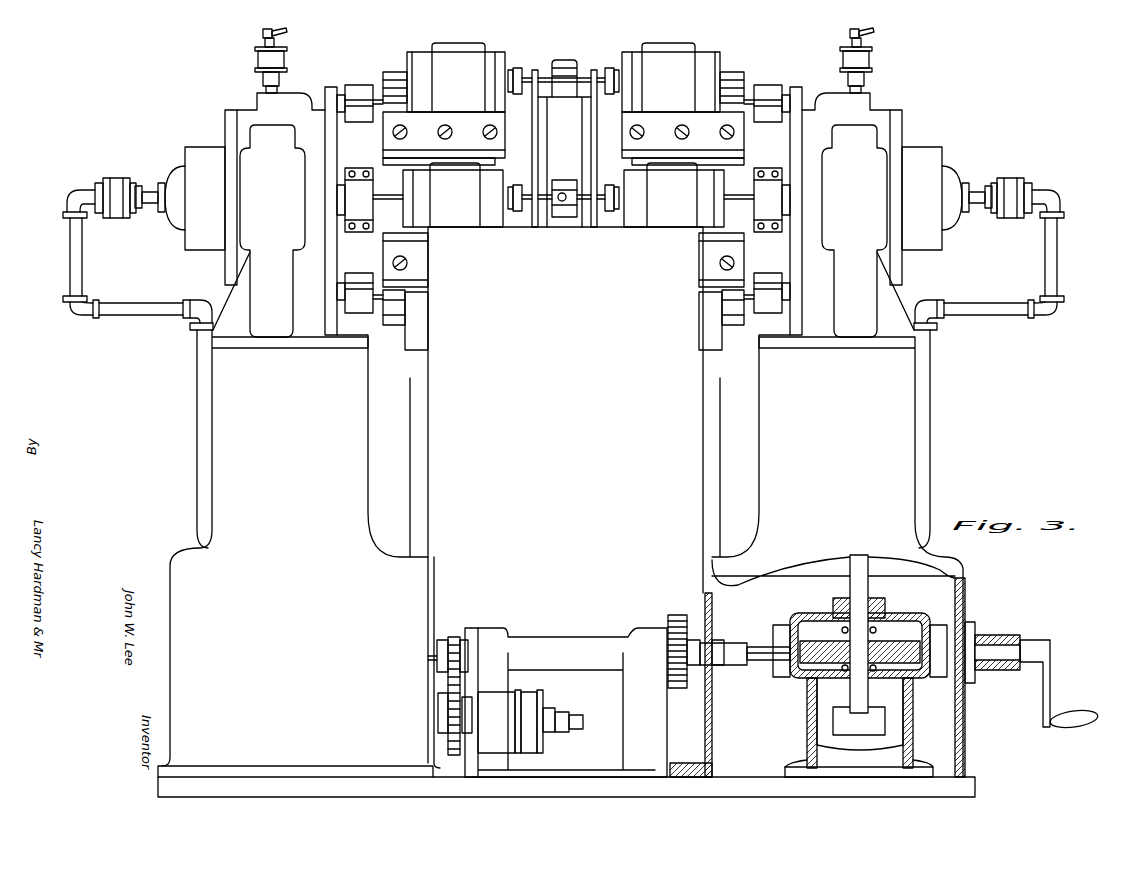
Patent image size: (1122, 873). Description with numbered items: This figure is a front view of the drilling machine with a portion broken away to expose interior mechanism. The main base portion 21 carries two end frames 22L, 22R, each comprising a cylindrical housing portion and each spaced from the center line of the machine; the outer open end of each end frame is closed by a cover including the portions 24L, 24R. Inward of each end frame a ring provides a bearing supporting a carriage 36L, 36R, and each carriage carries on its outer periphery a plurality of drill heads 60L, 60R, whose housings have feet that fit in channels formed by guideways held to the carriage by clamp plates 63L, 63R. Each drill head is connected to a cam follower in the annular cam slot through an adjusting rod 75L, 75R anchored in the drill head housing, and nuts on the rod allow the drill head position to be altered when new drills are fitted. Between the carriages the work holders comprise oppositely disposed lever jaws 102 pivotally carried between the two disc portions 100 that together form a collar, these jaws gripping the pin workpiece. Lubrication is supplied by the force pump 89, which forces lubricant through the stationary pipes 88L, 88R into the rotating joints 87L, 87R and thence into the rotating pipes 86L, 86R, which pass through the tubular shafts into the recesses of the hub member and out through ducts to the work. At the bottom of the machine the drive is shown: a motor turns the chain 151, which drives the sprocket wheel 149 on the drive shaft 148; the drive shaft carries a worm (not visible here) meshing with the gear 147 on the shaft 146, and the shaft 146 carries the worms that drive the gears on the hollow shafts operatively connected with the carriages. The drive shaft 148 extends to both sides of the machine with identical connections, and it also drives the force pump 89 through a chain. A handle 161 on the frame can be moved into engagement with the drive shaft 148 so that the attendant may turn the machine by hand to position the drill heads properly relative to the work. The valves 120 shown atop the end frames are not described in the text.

The main base portion 21 is at (228, 565).
The end frame 22L is at (240, 118).
The end frame 22R is at (887, 128).
The cover portion 24L is at (209, 244).
The cover portion 24R is at (918, 242).
The carriage 36L is at (395, 168).
The carriage 36R is at (732, 172).
The drill head 60L is at (467, 215).
The drill head 60R is at (677, 213).
The clamp plate 63L is at (462, 124).
The clamp plate 63R is at (662, 124).
The adjusting rod 75L is at (395, 197).
The adjusting rod 75R is at (737, 196).
The pipe 86L is at (157, 204).
The pipe 86R is at (975, 193).
The rotating joint 87L is at (118, 178).
The rotating joint 87R is at (1013, 180).
The feed pipe 88L is at (78, 252).
The pipe 88R is at (1052, 258).
The force pump 89 is at (548, 713).
The disc portions 100 is at (590, 112).
The lever jaws 102 is at (565, 210).
The valve 120 is at (258, 60).
The shaft 146 is at (860, 567).
The gear 147 is at (898, 650).
The drive shaft 148 is at (755, 648).
The sprocket wheel 149 is at (678, 618).
The chain 151 is at (452, 683).
The handle 161 is at (1052, 663).